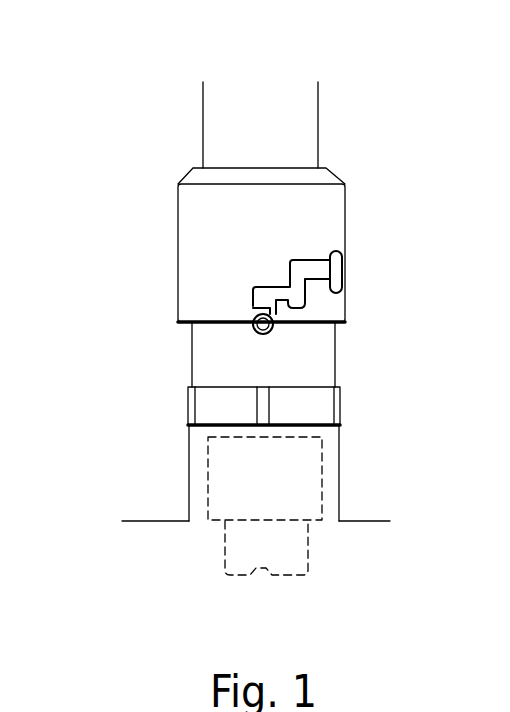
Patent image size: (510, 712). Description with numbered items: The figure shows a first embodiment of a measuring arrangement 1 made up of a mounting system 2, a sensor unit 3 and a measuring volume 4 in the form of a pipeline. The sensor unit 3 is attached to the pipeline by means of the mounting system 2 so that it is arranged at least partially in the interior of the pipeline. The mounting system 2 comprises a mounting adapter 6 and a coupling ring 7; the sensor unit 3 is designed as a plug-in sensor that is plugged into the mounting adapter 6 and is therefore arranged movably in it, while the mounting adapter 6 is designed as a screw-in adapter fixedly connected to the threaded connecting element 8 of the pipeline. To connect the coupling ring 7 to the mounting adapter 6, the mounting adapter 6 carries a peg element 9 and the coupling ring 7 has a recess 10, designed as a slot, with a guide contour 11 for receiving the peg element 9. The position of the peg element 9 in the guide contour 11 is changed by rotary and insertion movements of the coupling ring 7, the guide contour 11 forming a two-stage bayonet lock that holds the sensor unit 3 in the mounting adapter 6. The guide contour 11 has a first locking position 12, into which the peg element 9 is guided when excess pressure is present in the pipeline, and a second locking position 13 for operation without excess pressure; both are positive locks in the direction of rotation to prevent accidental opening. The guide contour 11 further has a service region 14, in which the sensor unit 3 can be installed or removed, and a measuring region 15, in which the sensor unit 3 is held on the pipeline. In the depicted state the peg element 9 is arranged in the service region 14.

The measuring arrangement 1 is at (112, 74).
The mounting system 2 is at (138, 394).
The sensor unit 3 is at (265, 128).
The measuring volume 4 is at (163, 533).
The mounting adapter 6 is at (325, 408).
The coupling ring 7 is at (302, 195).
The connecting element 8 is at (188, 467).
The peg element 9 is at (253, 326).
The recess 10 is at (344, 322).
The guide contour 11 is at (253, 288).
The first locking position 12 is at (337, 285).
The second locking position 13 is at (336, 252).
The service region 14 is at (220, 289).
The measuring region 15 is at (360, 256).